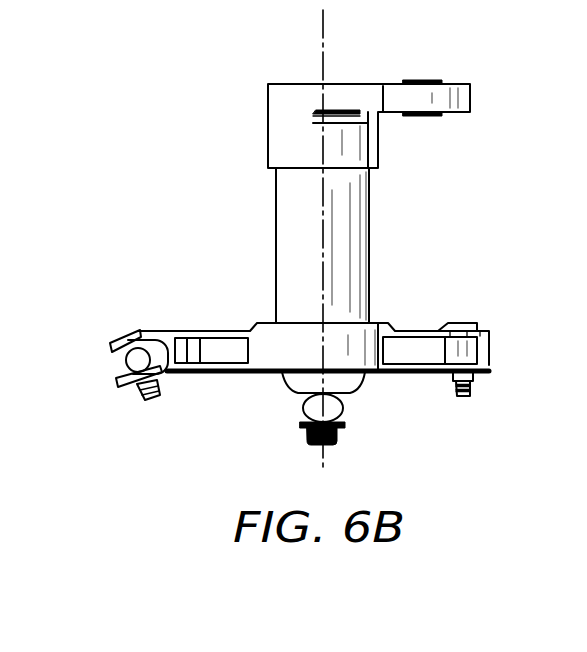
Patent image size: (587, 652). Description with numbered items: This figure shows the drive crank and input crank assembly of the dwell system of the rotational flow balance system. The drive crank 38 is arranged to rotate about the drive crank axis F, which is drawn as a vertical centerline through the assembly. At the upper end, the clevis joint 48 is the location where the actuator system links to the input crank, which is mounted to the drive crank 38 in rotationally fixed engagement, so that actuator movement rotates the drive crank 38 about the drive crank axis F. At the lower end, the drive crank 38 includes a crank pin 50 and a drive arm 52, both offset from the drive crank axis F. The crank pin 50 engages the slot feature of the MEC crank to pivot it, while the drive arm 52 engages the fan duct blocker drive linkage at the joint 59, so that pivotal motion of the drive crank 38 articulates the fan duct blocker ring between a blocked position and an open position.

The drive crank axis F is at (323, 48).
The drive crank 38 is at (296, 385).
The clevis joint 48 is at (425, 116).
The crank pin 50 is at (466, 397).
The drive arm 52 is at (207, 330).
The joint 59 is at (124, 357).